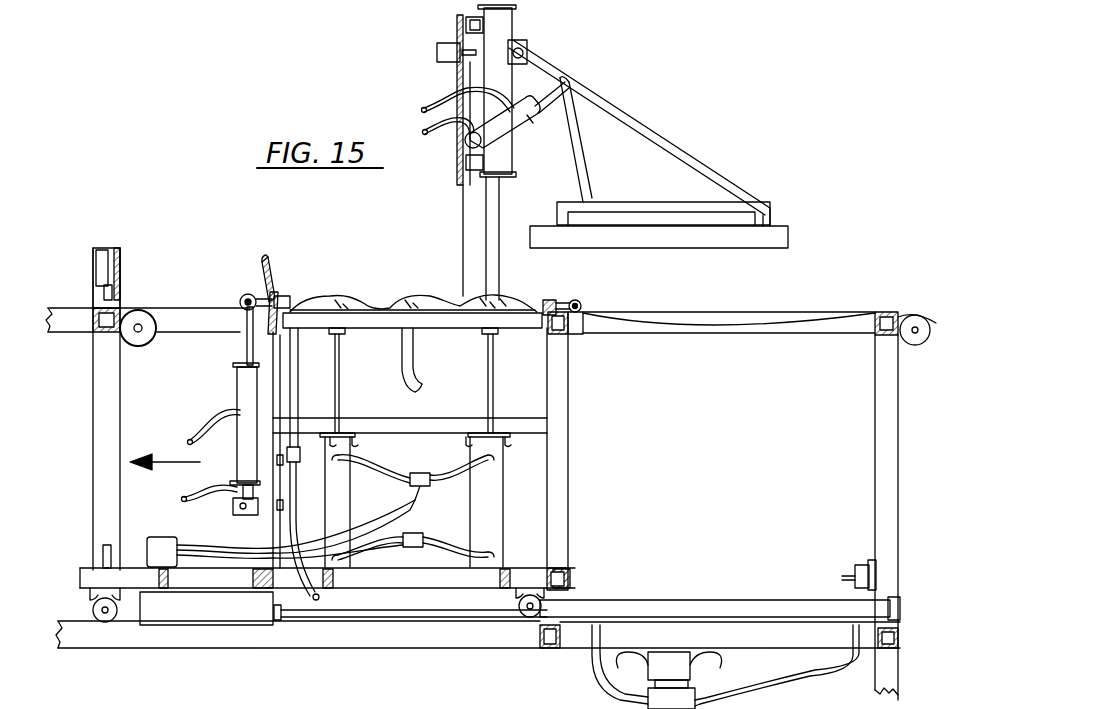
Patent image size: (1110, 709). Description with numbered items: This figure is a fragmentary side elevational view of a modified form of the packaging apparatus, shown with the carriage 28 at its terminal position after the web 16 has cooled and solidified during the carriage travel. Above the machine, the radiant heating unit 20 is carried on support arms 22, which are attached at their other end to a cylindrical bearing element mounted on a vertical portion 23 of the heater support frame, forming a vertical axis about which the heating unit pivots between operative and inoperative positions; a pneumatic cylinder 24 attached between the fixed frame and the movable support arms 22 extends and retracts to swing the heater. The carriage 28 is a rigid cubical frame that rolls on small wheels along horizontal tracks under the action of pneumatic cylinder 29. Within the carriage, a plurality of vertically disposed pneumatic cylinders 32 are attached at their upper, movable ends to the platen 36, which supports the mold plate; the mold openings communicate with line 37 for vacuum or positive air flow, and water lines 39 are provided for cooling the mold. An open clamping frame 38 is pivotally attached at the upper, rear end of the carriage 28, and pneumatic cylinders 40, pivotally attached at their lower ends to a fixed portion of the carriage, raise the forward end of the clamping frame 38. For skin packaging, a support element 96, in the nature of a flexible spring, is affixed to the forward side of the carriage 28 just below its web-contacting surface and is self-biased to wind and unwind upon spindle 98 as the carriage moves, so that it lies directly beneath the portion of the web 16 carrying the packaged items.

The web 16 is at (682, 323).
The radiant heating unit 20 is at (768, 247).
The support arms 22 is at (660, 149).
The vertical portion 23 is at (500, 257).
The pneumatic cylinder 24 is at (518, 120).
The carriage 28 is at (563, 450).
The pneumatic cylinder 29 is at (703, 610).
The pneumatic cylinders 32 is at (342, 500).
The platen 36 is at (453, 325).
The line 37 is at (398, 362).
The clamping frame 38 is at (283, 282).
The water lines 39 is at (295, 393).
The pneumatic cylinders 40 is at (242, 422).
The support element 96 is at (193, 312).
The spindle 98 is at (150, 348).